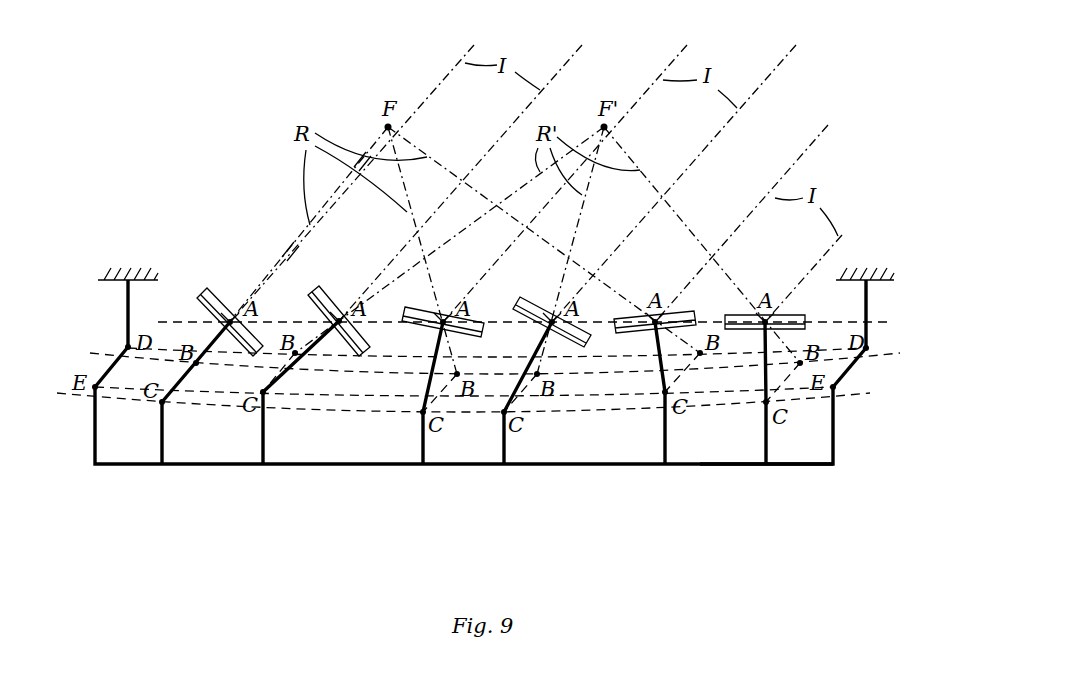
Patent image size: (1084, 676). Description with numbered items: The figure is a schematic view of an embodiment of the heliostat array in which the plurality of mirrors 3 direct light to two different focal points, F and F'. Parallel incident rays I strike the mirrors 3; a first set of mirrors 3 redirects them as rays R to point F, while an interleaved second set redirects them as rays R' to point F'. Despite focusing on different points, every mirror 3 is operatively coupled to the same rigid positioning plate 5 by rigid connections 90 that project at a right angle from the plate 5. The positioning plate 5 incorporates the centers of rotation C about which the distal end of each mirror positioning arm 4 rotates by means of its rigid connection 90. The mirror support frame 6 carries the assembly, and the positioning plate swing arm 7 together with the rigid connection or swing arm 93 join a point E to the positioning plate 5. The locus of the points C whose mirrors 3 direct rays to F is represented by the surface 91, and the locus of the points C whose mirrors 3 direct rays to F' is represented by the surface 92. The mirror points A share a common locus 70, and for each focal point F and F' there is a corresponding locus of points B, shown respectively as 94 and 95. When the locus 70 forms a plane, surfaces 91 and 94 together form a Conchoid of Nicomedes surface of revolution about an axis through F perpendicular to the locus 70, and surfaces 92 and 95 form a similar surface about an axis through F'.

The mirrors 3 is at (198, 290).
The mirror positioning arms 4 is at (432, 352).
The positioning plate 5 is at (795, 468).
The mirror support frame 6 is at (128, 315).
The positioning plate swing arm 7 is at (103, 372).
The locus of points A 70 is at (708, 335).
The rigid connection 90 is at (166, 440).
The locus of points C for focal point F 91 is at (332, 415).
The locus of points C for focal point F' 92 is at (605, 418).
The rigid connection or swing arm 93 is at (90, 440).
The locus of points B for focal point F 94 is at (378, 375).
The locus of points B for focal point F' 95 is at (727, 412).